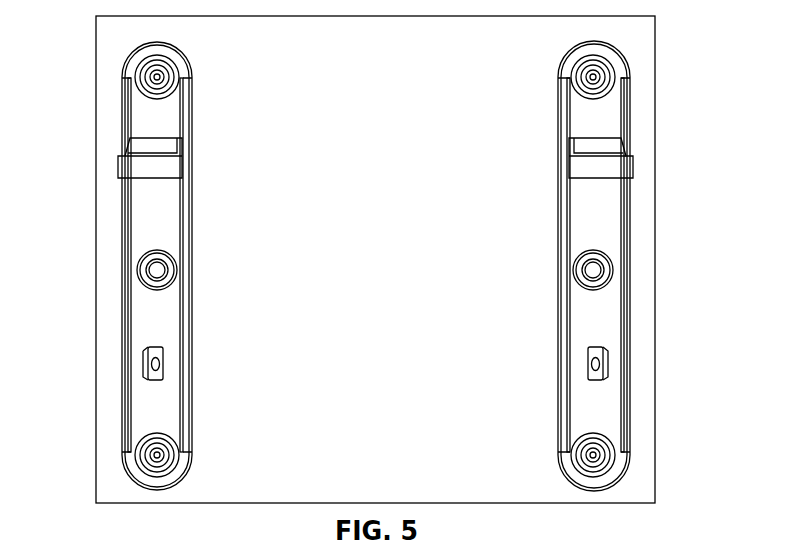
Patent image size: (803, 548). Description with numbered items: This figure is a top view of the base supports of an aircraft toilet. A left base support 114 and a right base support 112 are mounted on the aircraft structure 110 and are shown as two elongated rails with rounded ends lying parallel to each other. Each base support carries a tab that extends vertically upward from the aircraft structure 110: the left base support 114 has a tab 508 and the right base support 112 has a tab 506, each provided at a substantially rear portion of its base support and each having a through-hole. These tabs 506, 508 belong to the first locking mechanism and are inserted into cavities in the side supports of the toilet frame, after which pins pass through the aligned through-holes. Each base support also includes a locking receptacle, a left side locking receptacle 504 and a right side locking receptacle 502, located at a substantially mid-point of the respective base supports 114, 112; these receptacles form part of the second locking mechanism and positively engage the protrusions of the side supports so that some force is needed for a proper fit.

The aircraft structure 110 is at (600, 455).
The right base support 112 is at (644, 266).
The left base support 114 is at (140, 226).
The right side locking receptacle 502 is at (622, 170).
The left side locking receptacle 504 is at (128, 170).
The tab 506 is at (607, 366).
The tab 508 is at (147, 367).